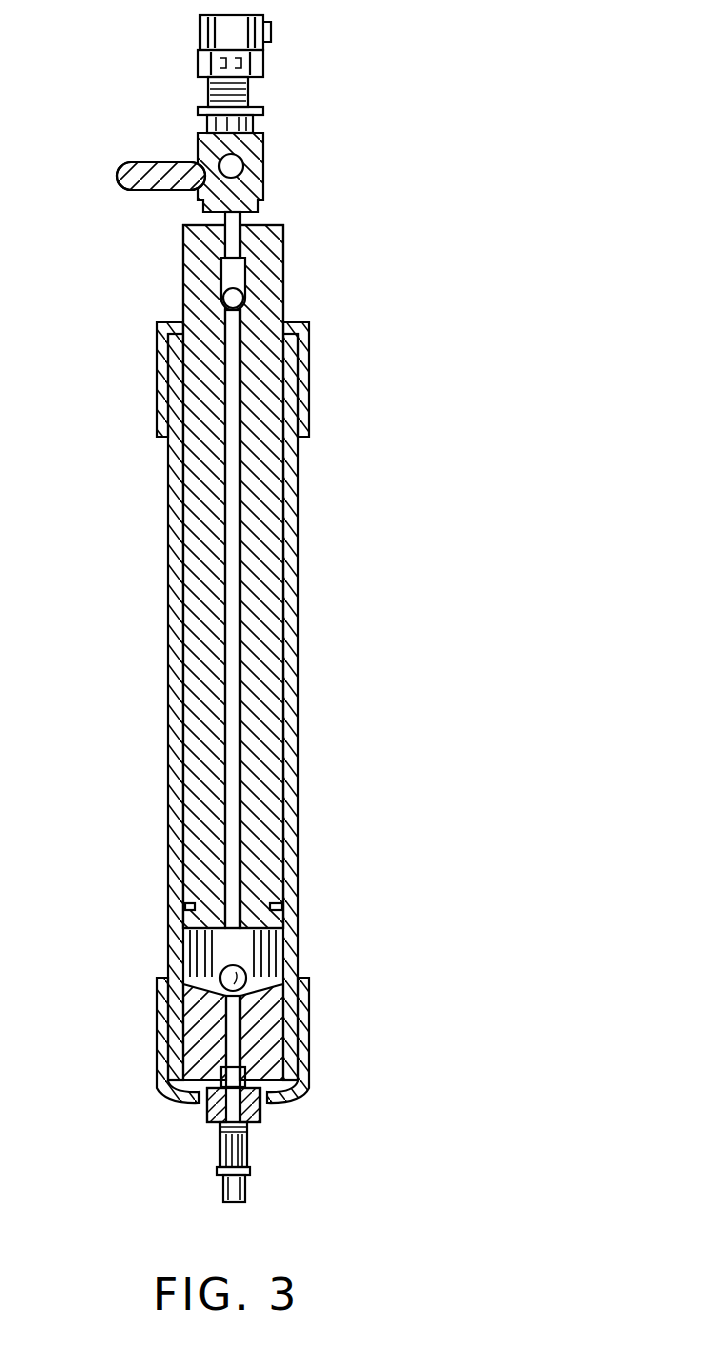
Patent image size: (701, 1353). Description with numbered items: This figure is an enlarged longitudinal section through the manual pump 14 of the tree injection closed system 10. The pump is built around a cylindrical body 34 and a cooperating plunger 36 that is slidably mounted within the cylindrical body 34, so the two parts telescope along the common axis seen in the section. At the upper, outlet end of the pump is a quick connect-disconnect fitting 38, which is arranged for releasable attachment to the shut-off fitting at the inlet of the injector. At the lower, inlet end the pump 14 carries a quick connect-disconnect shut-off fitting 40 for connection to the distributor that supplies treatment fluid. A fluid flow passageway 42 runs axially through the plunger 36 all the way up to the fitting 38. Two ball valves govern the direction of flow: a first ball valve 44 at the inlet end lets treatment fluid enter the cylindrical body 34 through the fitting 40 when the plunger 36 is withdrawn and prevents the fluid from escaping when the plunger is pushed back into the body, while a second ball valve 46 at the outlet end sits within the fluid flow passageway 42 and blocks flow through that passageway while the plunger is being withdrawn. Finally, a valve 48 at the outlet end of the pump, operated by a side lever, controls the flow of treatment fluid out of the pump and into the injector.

The tree injection closed system 10 is at (420, 413).
The manual pump 14 is at (309, 712).
The cylindrical body 34 is at (298, 638).
The plunger 36 is at (200, 573).
The quick connect-disconnect fitting 38 is at (200, 35).
The quick connect-disconnect shut-off fitting 40 is at (250, 1150).
The fluid flow passageway 42 is at (233, 765).
The first ball valve 44 is at (220, 978).
The second ball valve 46 is at (243, 298).
The valve 48 is at (203, 158).